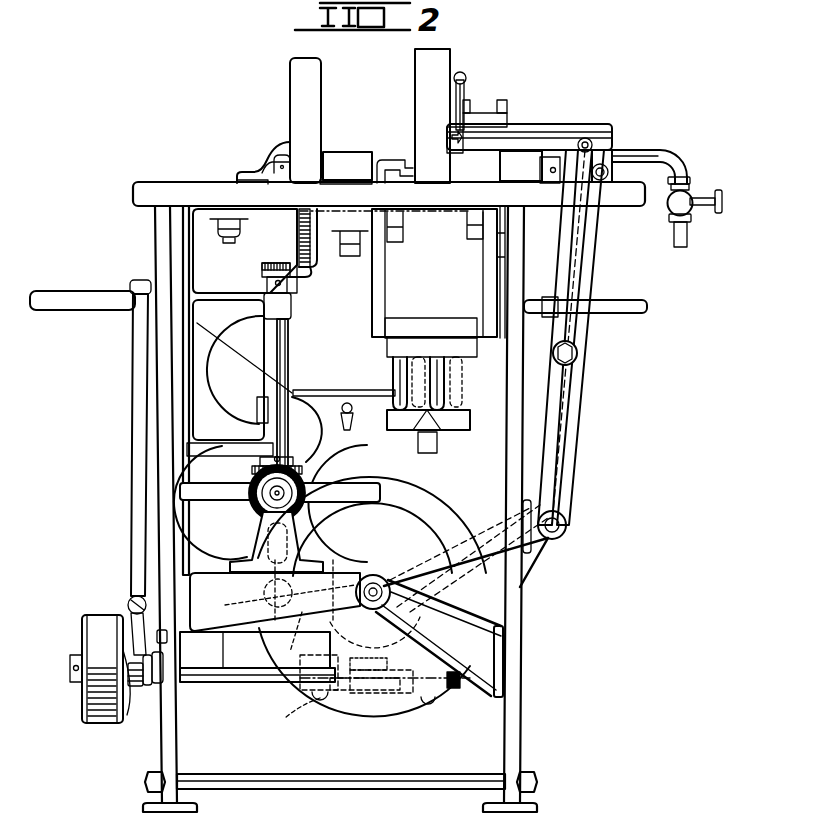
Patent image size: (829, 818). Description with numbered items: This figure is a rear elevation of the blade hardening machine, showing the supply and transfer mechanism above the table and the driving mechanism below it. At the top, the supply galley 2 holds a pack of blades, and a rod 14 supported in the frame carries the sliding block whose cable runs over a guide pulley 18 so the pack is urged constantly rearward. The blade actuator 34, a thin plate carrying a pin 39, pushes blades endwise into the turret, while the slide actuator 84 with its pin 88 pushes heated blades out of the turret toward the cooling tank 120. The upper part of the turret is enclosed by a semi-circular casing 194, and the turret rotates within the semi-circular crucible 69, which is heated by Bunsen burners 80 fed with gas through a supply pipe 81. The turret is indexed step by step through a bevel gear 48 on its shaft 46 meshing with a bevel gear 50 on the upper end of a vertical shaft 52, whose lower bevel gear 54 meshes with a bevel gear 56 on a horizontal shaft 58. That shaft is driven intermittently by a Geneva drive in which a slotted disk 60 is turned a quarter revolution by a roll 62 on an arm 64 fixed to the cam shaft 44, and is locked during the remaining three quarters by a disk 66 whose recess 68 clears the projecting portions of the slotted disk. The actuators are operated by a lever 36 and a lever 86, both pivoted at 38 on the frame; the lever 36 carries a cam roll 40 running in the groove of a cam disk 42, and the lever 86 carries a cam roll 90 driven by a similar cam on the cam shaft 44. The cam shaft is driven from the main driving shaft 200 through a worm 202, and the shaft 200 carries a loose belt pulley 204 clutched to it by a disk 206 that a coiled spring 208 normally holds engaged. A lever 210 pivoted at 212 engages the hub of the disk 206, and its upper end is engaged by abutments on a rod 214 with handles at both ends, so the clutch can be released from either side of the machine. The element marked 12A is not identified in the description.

The semi-circular casing 194 is at (452, 60).
The rod 14 is at (466, 100).
The supply galley 2 is at (486, 112).
The blade actuator 34 is at (540, 140).
The blade actuator 84 is at (586, 138).
The rod or pin 39 is at (602, 145).
The shaft 46 is at (392, 160).
The guide pulley 18 is at (446, 138).
The rod or pin 88 is at (609, 173).
The bevel gear 48 is at (296, 236).
The bevel gear 50 is at (261, 268).
The crucible 69 is at (386, 278).
The rod 214 is at (534, 294).
The vertical shaft 52 is at (290, 352).
The tank 120 is at (266, 368).
The Bunsen burners 80 is at (393, 373).
The pivot pin 12A is at (341, 409).
The lever 210 is at (132, 405).
The lever 86 is at (586, 386).
The lever 36 is at (576, 408).
The bevel gear 54 is at (310, 452).
The supply pipe 81 is at (440, 448).
The slotted disk 60 is at (312, 470).
The disk 66 is at (420, 500).
The horizontal shaft 58 is at (285, 498).
The pivot 38 is at (567, 525).
The bevel gear 56 is at (238, 528).
The recess 68 is at (335, 555).
The cam shaft 44 is at (380, 578).
The pivot 212 is at (128, 598).
The roll 62 is at (260, 603).
The arm 64 is at (270, 650).
The cam roll 90 is at (392, 638).
The coiled spring 208 is at (158, 690).
The shaft 200 is at (265, 685).
The belt pulley 204 is at (108, 722).
The disk 206 is at (127, 718).
The worm 202 is at (330, 710).
The cam roll 40 is at (392, 706).
The cam disk 42 is at (405, 705).